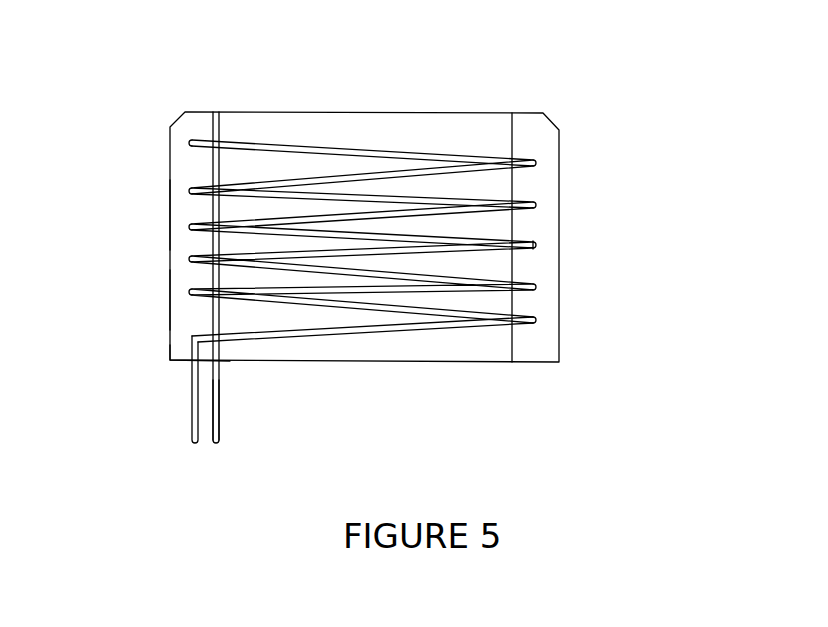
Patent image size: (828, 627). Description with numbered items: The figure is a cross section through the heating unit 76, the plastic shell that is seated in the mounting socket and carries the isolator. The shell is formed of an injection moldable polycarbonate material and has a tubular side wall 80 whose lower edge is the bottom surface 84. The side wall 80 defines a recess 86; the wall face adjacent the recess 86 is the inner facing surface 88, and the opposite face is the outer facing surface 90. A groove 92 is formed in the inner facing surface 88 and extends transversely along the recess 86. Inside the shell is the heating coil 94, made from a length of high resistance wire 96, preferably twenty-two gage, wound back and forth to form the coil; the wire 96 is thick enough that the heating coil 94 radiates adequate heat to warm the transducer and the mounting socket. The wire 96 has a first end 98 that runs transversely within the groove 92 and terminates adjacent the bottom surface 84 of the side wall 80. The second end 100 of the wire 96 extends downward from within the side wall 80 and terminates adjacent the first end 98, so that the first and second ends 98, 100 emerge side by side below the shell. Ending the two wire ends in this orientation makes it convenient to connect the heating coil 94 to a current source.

The heating unit 76 is at (163, 112).
The tubular side wall 80 is at (175, 213).
The bottom surface 84 is at (170, 365).
The recess 86 is at (507, 140).
The inner facing surface 88 is at (221, 152).
The outer facing surface 90 is at (170, 300).
The groove 92 is at (218, 312).
The heating coil 94 is at (535, 243).
The high resistance wire 96 is at (435, 332).
The first end 98 is at (224, 450).
The second end 100 is at (188, 447).